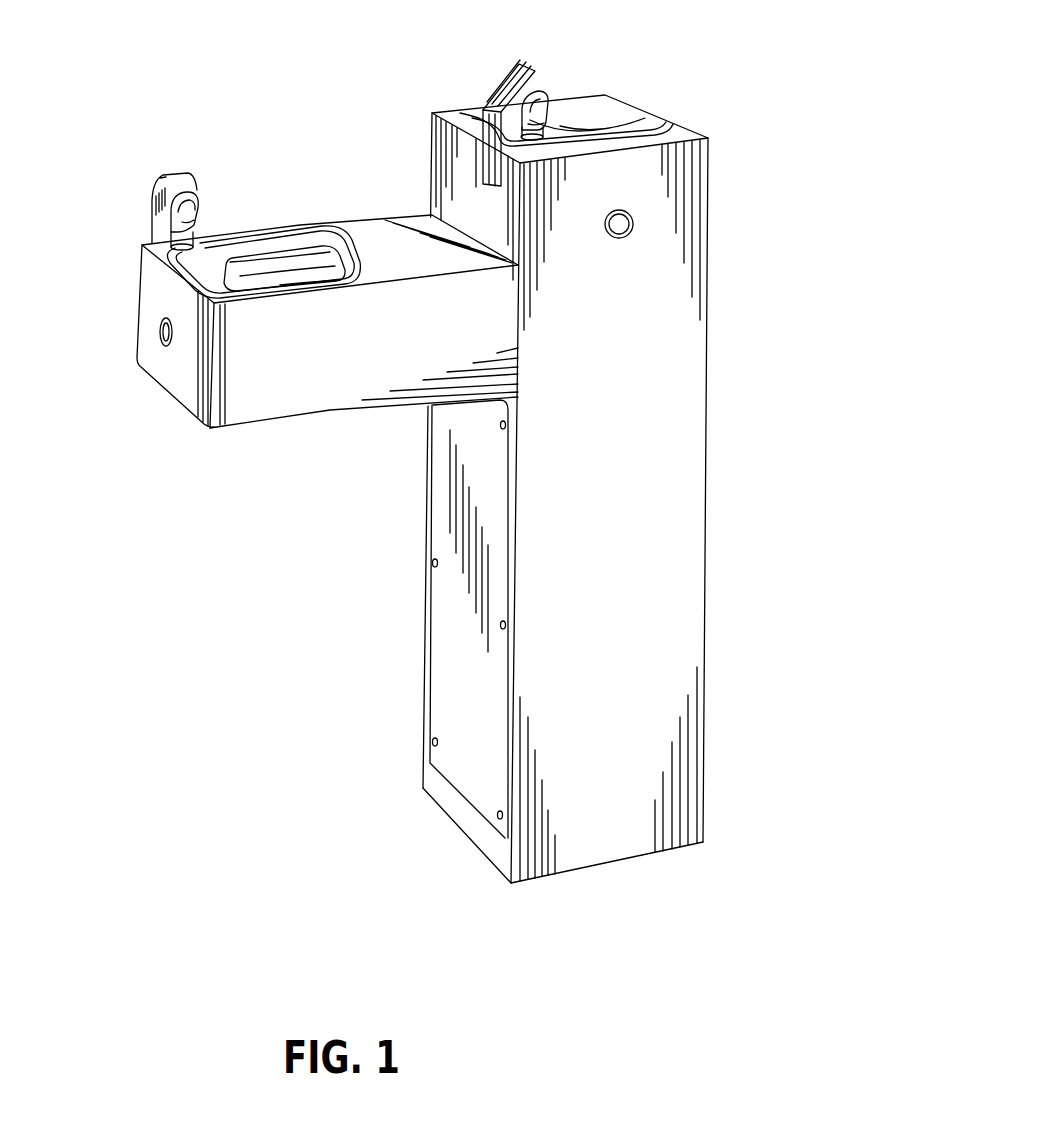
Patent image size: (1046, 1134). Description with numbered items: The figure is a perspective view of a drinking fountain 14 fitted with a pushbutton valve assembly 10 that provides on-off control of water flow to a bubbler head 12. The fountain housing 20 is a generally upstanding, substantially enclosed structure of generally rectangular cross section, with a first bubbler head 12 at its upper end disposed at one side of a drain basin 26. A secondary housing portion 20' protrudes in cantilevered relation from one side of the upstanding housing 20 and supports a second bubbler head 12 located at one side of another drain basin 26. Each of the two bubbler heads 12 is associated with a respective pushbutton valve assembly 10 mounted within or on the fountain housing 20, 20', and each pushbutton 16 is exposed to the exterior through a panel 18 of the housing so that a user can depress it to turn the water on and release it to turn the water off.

The pushbutton valve assembly 10 is at (458, 461).
The bubbler head 12 is at (195, 198).
The drinking fountain 14 is at (712, 608).
The pushbutton 16 is at (412, 263).
The panel 18 is at (192, 403).
The fountain housing 20 is at (572, 788).
The secondary housing portion 20' is at (364, 417).
The drain basin 26 is at (287, 248).